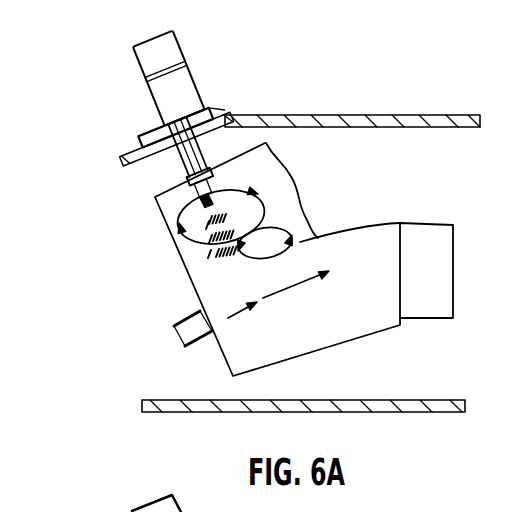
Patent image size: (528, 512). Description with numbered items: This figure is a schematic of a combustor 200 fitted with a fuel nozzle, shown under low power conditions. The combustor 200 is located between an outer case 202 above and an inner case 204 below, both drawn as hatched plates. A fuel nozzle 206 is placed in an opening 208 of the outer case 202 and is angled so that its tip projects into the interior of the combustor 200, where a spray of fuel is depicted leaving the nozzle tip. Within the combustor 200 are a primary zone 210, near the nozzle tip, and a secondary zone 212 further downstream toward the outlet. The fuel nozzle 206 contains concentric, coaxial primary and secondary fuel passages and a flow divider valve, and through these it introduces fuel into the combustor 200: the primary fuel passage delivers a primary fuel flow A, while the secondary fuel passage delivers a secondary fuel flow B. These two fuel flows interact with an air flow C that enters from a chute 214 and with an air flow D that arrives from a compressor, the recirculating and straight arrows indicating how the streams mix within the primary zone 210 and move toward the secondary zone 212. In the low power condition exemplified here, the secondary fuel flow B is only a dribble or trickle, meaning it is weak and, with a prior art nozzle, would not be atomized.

The combustor 200 is at (178, 243).
The outer case 202 is at (370, 118).
The inner case 204 is at (408, 405).
The fuel nozzle 206 is at (137, 65).
The opening 208 is at (166, 160).
The primary zone 210 is at (306, 190).
The secondary zone 212 is at (313, 234).
The chute 214 is at (195, 348).
The primary fuel flow A is at (213, 258).
The secondary fuel flow B is at (247, 188).
The air flow C is at (174, 344).
The air flow D is at (172, 205).